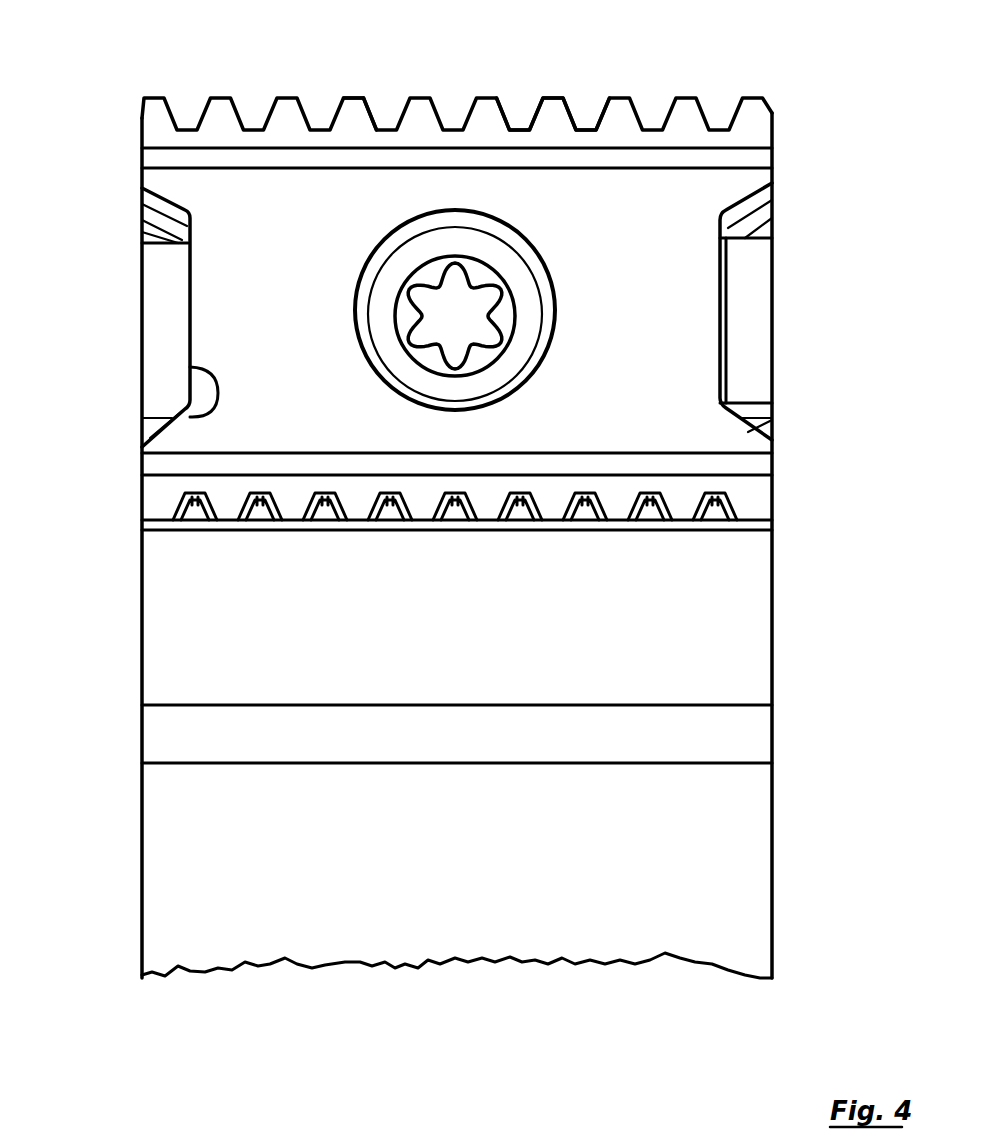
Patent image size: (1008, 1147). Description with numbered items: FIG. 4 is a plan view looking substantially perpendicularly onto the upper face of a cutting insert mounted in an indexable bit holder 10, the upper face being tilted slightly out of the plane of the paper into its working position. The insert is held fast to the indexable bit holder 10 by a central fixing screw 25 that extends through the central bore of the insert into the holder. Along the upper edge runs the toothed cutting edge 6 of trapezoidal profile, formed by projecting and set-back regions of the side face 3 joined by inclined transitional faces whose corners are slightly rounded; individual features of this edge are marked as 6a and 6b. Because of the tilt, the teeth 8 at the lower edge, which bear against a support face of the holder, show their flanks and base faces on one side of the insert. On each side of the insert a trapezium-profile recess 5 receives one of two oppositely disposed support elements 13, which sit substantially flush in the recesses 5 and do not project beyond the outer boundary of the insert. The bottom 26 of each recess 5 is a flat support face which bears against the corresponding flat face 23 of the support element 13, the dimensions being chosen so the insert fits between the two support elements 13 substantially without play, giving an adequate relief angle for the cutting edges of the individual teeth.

The side face 3 is at (650, 515).
The recess 5 is at (750, 228).
The cutting edge 6 is at (296, 94).
The serration tooth 6a is at (355, 96).
The serration flank 6b is at (372, 113).
The teeth 8 is at (500, 104).
The indexable bit holder 10 is at (773, 650).
The support element 13 is at (755, 272).
The flat face 23 is at (150, 406).
The fixing screw 25 is at (505, 322).
The bottom of the recess 26 is at (145, 228).